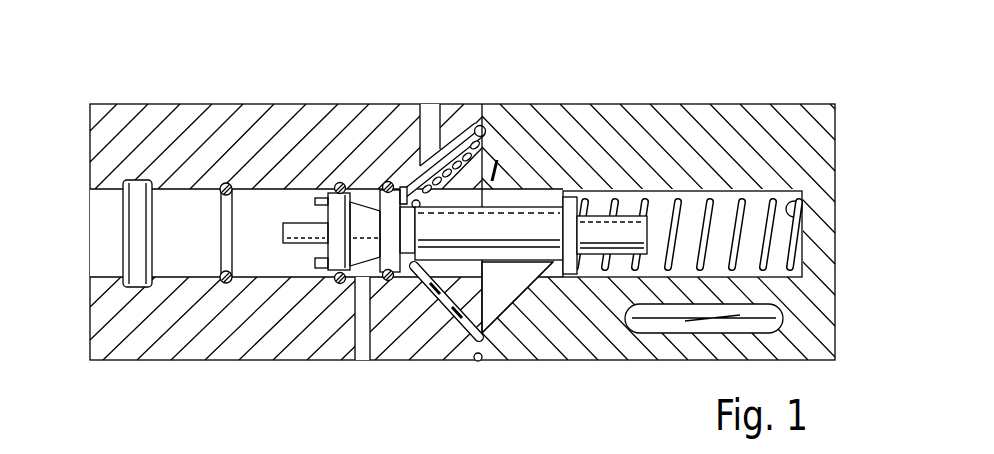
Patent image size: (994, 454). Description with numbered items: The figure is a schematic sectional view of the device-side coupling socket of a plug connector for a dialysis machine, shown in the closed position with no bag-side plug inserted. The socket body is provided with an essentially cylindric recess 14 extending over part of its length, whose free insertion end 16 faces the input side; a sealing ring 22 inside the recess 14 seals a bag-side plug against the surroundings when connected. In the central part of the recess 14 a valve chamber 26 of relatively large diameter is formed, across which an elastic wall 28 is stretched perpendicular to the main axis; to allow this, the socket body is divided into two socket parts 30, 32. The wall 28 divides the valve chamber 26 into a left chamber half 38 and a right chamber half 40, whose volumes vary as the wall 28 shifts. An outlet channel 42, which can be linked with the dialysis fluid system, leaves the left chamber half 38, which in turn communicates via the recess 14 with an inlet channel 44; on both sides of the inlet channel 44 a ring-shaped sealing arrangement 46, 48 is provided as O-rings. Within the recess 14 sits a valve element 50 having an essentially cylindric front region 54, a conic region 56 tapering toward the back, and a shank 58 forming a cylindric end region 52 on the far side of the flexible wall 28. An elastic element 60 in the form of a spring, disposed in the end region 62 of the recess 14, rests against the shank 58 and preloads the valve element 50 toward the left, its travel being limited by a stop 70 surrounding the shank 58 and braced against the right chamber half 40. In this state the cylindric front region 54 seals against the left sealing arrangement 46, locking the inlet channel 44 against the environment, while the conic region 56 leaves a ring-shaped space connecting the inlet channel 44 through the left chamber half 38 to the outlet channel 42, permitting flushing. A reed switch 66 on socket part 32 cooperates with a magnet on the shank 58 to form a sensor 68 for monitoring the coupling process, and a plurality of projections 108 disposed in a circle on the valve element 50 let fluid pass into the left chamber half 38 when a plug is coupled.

The cylindric recess 14 is at (76, 259).
The free insertion end 16 is at (80, 204).
The sealing ring 22 is at (220, 283).
The valve chamber 26 is at (520, 212).
The elastic wall 28 is at (455, 174).
The socket part 30 is at (156, 125).
The socket part 32 is at (715, 127).
The left chamber half 38 is at (455, 330).
The right chamber half 40 is at (500, 288).
The outlet channel 42 is at (430, 112).
The inlet channel 44 is at (363, 340).
The ring-shaped sealing arrangement 46 is at (338, 285).
The ring-shaped sealing arrangement 48 is at (389, 282).
The valve element 50 is at (306, 254).
The cylindric end region 52 is at (603, 225).
The cylindric front region 54 is at (333, 180).
The conic region 56 is at (388, 182).
The shank 58 is at (565, 210).
The elastic element 60 is at (753, 204).
The end region 62 is at (805, 227).
The reed switch 66 is at (690, 332).
The sensor 68 is at (648, 343).
The stop 70 is at (527, 270).
The projections 108 is at (316, 200).